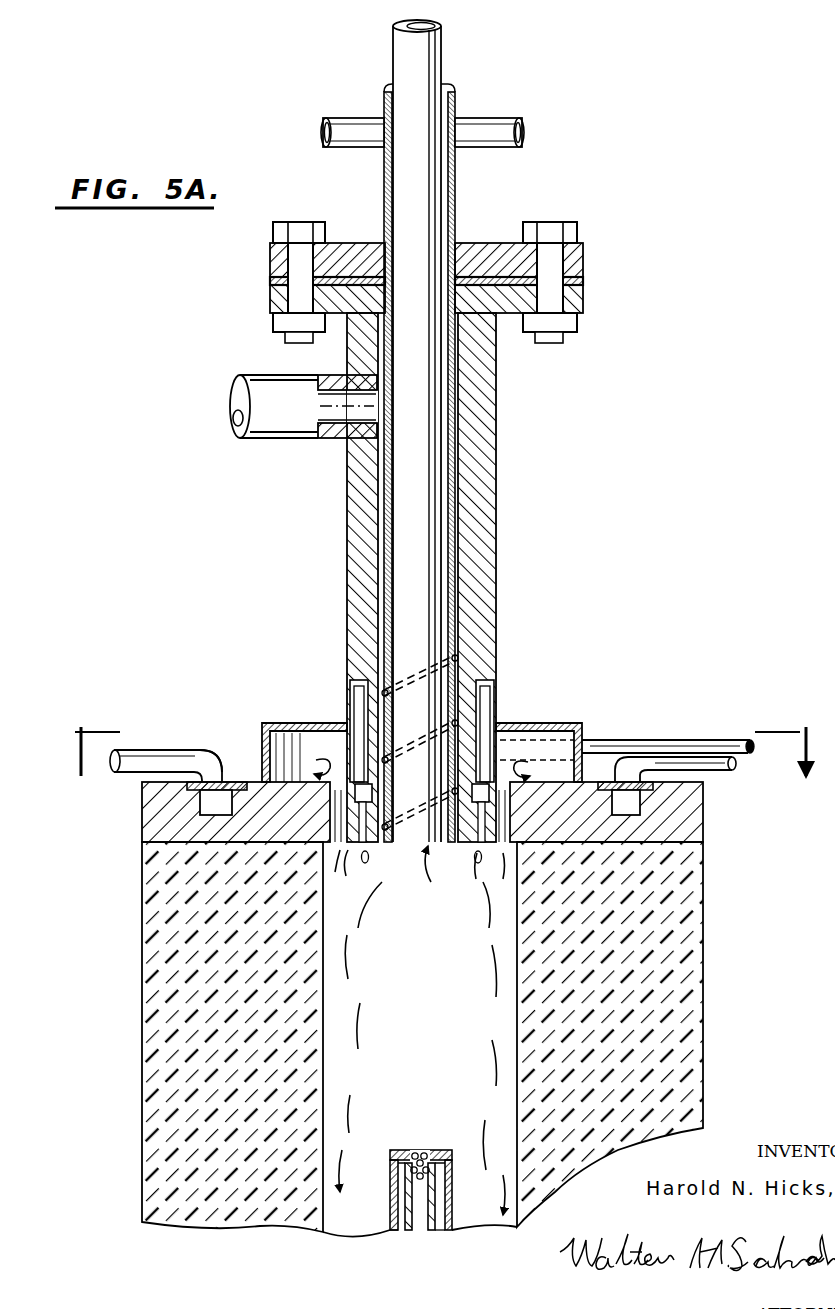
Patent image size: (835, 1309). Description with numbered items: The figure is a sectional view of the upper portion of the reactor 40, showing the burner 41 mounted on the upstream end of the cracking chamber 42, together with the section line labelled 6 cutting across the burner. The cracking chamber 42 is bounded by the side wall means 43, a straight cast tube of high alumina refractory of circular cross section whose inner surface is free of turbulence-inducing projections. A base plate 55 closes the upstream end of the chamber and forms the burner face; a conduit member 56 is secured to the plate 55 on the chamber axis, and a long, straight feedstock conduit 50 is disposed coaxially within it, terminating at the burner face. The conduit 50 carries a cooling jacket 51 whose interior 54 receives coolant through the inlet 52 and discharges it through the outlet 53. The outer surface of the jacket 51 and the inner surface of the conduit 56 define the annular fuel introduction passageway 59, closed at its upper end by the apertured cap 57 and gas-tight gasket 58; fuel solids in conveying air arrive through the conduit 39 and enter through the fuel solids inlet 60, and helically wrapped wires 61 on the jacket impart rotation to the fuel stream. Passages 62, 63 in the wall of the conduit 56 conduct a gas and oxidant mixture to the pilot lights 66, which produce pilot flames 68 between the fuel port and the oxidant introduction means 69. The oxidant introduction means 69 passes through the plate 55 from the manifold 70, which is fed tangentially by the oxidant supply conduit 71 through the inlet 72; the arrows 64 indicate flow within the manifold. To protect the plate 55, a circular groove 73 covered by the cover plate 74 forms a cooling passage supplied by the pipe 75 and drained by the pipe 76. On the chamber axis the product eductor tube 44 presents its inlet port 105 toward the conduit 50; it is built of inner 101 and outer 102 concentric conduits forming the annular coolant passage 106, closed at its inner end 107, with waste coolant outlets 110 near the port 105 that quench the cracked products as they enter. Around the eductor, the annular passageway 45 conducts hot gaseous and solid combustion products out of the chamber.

The conduit 39 is at (274, 386).
The reactor 40 is at (411, 1009).
The burner 41 is at (438, 877).
The cracking chamber 42 is at (436, 1010).
The side wall means 43 is at (680, 980).
The product eductor tube 44 is at (387, 1205).
The annular passageway 45 is at (486, 1223).
The conduit 50 is at (416, 45).
The cooling jacket 51 is at (455, 208).
The coolant inlet 52 is at (490, 128).
The coolant outlet 53 is at (357, 128).
The interior of cooling jacket 54 is at (385, 136).
The base plate 55 is at (684, 818).
The conduit member 56 is at (356, 510).
The apertured cap 57 is at (505, 256).
The gas-tight gasket 58 is at (347, 270).
The annular fuel introduction passageway 59 is at (462, 510).
The fuel solids inlet 60 is at (379, 410).
The wires 61 is at (457, 669).
The passage 62 is at (346, 676).
The passage 63 is at (500, 682).
The flow arrow 64 is at (534, 776).
The pilot lights 66 is at (424, 1032).
The pilot flames 68 is at (369, 864).
The oxidant introduction means 69 is at (320, 858).
The manifold 70 is at (290, 725).
The oxidant supply conduit 71 is at (670, 740).
The inlet 72 is at (520, 726).
The circular groove 73 is at (200, 805).
The circular cover plate 74 is at (218, 768).
The supply pipe 75 is at (150, 750).
The outlet pipe 76 is at (710, 766).
The inner conduit 101 is at (410, 1230).
The outer conduit 102 is at (392, 1228).
The inlet port 105 is at (420, 1158).
The annular coolant passage 106 is at (440, 1225).
The inner end 107 is at (398, 1152).
The waste coolant outlets 110 is at (410, 1165).
The section line 6 is at (438, 751).